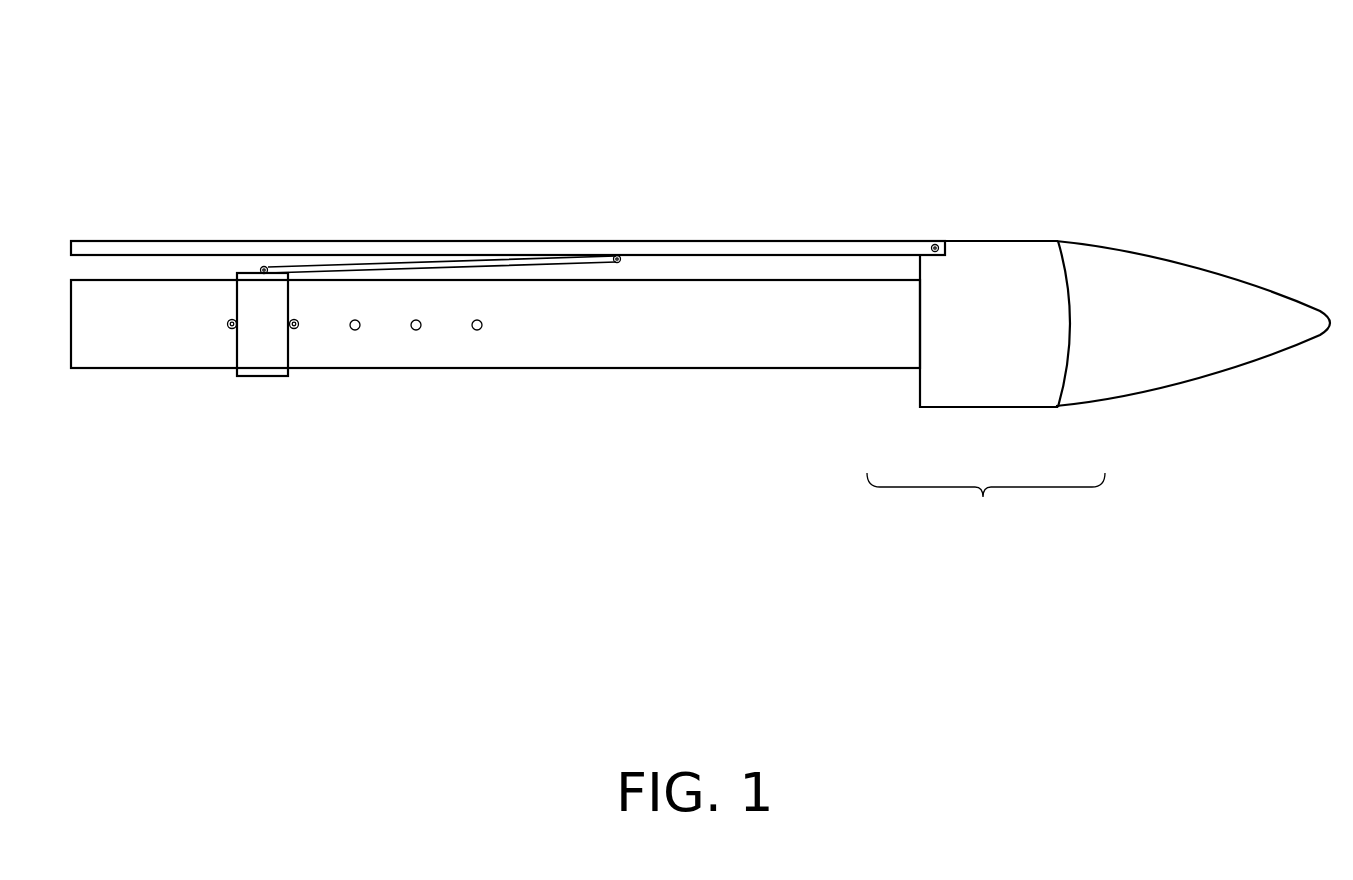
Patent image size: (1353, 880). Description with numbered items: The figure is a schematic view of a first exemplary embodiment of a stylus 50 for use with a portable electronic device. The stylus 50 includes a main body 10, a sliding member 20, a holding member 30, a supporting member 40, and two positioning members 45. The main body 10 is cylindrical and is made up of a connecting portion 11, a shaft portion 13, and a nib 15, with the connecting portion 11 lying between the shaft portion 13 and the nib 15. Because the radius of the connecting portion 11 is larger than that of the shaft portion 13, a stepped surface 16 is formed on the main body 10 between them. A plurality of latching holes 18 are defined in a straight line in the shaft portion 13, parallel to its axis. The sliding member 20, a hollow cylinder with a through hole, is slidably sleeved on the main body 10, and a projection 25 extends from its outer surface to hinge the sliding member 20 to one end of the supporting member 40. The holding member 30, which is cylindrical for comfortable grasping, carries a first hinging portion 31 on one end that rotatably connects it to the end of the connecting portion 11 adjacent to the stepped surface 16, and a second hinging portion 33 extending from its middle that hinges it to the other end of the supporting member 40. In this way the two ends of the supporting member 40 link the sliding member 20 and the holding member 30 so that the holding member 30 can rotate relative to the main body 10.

The main body 10 is at (986, 505).
The connecting portion 11 is at (983, 392).
The shaft portion 13 is at (855, 358).
The nib 15 is at (1108, 382).
The stepped surface 16 is at (919, 270).
The latching holes 18 is at (357, 330).
The sliding member 20 is at (268, 362).
The projection 25 is at (260, 267).
The holding member 30 is at (148, 247).
The first hinging portion 31 is at (930, 243).
The second hinging portion 33 is at (627, 260).
The supporting member 40 is at (320, 268).
The positioning members 45 is at (227, 330).
The stylus 50 is at (548, 92).